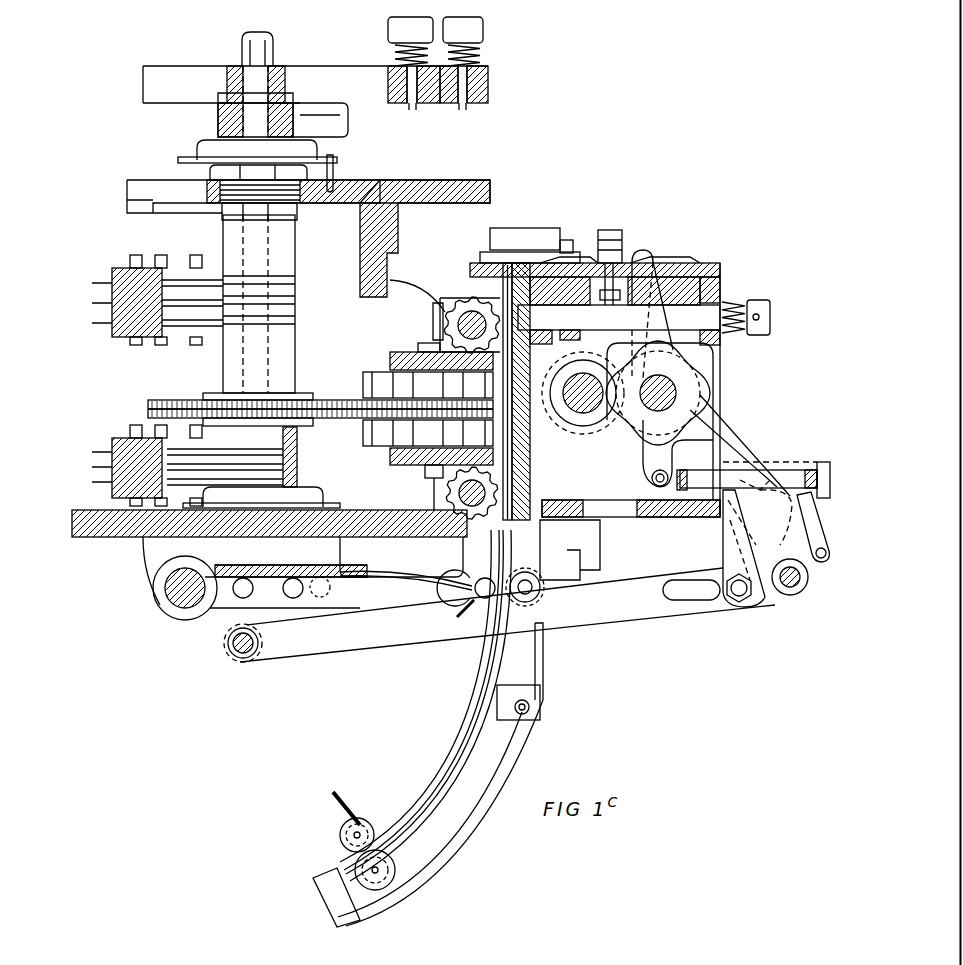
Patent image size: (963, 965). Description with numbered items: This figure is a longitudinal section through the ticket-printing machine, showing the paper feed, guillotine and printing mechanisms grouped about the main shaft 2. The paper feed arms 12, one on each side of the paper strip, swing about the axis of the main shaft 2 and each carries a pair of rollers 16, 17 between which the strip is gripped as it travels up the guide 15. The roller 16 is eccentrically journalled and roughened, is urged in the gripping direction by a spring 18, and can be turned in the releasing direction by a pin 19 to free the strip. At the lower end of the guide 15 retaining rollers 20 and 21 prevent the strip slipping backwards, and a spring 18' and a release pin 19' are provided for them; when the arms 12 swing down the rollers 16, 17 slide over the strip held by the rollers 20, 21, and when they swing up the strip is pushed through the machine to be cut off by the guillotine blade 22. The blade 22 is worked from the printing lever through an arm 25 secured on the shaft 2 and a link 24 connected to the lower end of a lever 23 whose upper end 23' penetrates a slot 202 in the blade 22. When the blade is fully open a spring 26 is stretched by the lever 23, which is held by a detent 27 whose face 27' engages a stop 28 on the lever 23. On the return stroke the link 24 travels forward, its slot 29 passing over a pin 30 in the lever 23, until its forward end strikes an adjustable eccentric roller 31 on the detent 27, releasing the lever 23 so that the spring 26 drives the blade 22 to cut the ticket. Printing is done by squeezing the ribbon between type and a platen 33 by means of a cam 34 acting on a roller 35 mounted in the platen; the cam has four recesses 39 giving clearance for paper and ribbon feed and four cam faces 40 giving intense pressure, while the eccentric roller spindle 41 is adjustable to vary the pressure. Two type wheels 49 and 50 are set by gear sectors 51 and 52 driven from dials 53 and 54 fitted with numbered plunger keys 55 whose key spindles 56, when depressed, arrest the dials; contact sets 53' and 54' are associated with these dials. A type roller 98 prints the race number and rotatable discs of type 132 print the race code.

The main shaft 2 is at (165, 588).
The paper feed arms 12 is at (436, 568).
The guide 15 is at (414, 808).
The roller 16 is at (485, 600).
The roller 17 is at (539, 596).
The spring 18 is at (406, 566).
The spring 18' is at (425, 705).
The pin 19 is at (442, 615).
The release pin 19' is at (355, 801).
The retaining roller 20 is at (340, 835).
The retaining roller 21 is at (393, 868).
The guillotine blade 22 is at (507, 264).
The lever 23 is at (728, 548).
The upper end of lever 23' is at (652, 299).
The link 24 is at (641, 616).
The arm 25 is at (224, 633).
The spring 26 is at (786, 478).
The detent 27 is at (818, 539).
The face 27' is at (760, 521).
The stop 28 is at (755, 480).
The slot 29 is at (691, 592).
The pin 30 is at (740, 600).
The adjustable eccentric roller 31 is at (801, 590).
The platen 33 is at (520, 458).
The cam 34 is at (644, 340).
The roller 35 is at (612, 422).
The recesses 39 is at (702, 386).
The cam faces 40 is at (700, 374).
The roller spindle 41 is at (580, 405).
The type wheel 49 is at (380, 372).
The type wheel 50 is at (383, 447).
The gear sector 51 is at (350, 401).
The gear sector 52 is at (347, 418).
The dial 53 is at (480, 84).
The contact set 53' is at (144, 300).
The dial 54 is at (315, 101).
The contact set 54' is at (180, 465).
The plunger keys 55 is at (435, 41).
The key spindles 56 is at (413, 106).
The type roller 98 is at (446, 493).
The rotatable discs of type 132 is at (466, 298).
The slot 202 is at (661, 288).